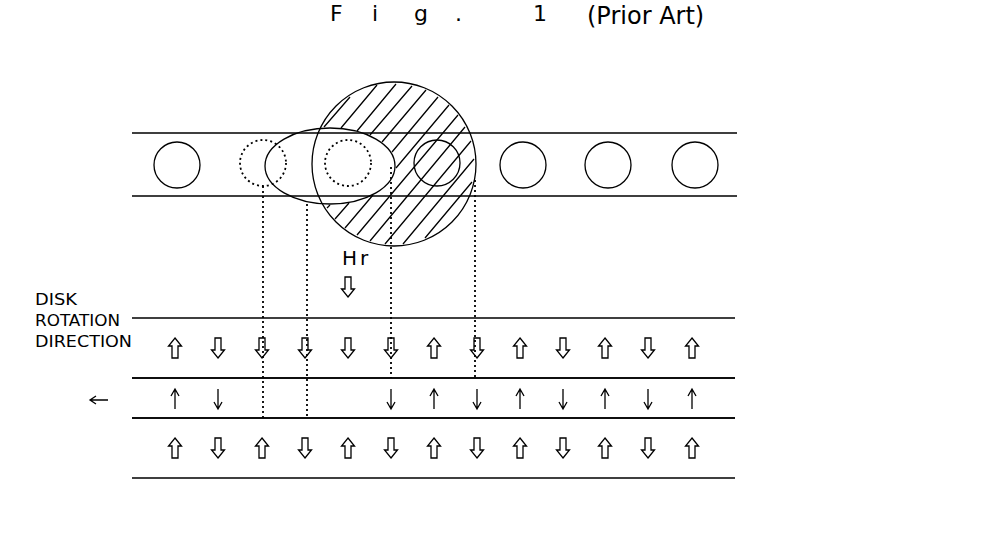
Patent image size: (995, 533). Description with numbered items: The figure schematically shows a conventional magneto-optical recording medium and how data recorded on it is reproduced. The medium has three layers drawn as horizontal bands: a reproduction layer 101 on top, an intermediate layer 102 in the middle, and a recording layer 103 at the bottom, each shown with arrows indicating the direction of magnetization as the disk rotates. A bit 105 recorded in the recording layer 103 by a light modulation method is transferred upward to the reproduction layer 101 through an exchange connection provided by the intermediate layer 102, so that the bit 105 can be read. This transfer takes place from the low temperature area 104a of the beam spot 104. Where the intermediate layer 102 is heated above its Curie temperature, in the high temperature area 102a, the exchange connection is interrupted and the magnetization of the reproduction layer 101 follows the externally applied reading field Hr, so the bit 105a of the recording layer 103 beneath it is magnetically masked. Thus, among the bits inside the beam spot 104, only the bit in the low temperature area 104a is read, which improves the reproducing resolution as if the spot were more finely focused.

The reproduction layer 101 is at (727, 340).
The intermediate layer 102 is at (720, 402).
The high temperature area 102a is at (330, 405).
The recording layer 103 is at (718, 446).
The beam spot 104 is at (439, 154).
The low temperature area 104a is at (460, 142).
The bit 105 is at (522, 188).
The bit 105a is at (332, 150).